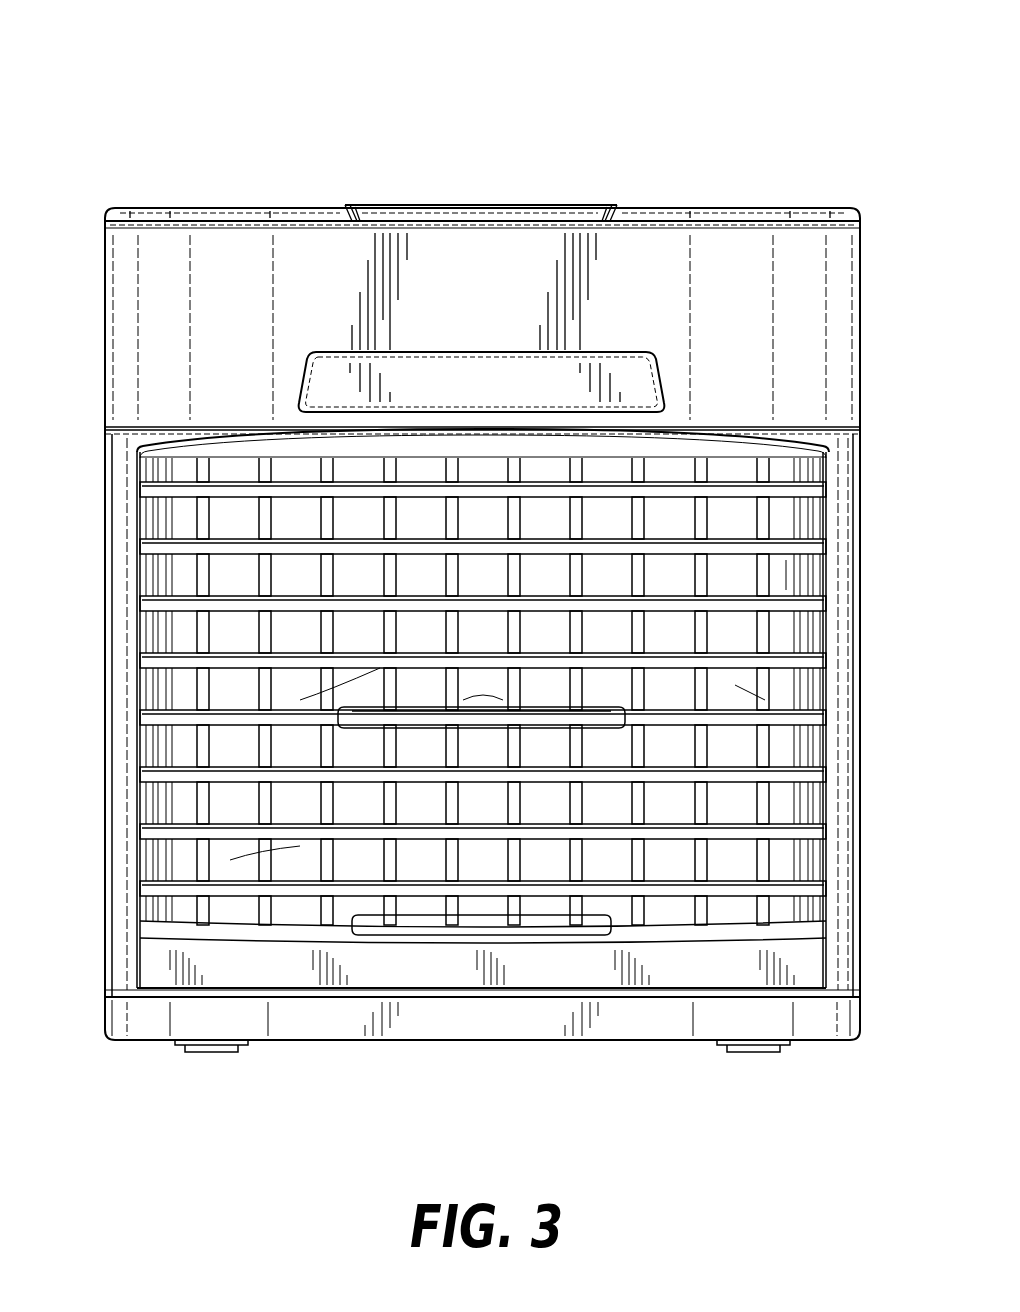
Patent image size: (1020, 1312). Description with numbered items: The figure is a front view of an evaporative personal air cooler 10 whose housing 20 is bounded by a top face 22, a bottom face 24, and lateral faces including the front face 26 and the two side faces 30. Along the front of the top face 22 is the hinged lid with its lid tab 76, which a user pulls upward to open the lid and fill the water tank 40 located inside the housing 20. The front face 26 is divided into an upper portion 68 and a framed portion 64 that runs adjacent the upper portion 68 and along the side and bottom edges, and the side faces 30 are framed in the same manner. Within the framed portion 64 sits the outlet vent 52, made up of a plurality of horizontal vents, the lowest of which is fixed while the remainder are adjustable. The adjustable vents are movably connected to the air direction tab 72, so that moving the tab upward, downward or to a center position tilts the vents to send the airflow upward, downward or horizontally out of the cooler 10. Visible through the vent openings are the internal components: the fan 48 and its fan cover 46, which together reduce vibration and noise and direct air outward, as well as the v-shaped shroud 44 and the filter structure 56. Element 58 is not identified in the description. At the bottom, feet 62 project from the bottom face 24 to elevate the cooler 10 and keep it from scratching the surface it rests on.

The evaporative air cooler 10 is at (288, 128).
The top face 22 is at (245, 203).
The lid tab 76 is at (477, 208).
The housing 20 is at (826, 310).
The upper portion 68 is at (160, 322).
The water tank 40 is at (802, 395).
The framed portion 64 is at (845, 487).
The side faces 30 is at (96, 543).
The front face 26 is at (125, 615).
The fan 48 is at (230, 788).
The outlet vent 52 is at (216, 758).
The air direction tab 72 is at (483, 716).
The v-shaped shroud 44 is at (348, 680).
The fan cover 46 is at (265, 850).
The filter structure 56 is at (811, 565).
The interior structure 58 is at (764, 692).
The bottom face 24 is at (268, 1045).
The feet 62 is at (752, 1053).